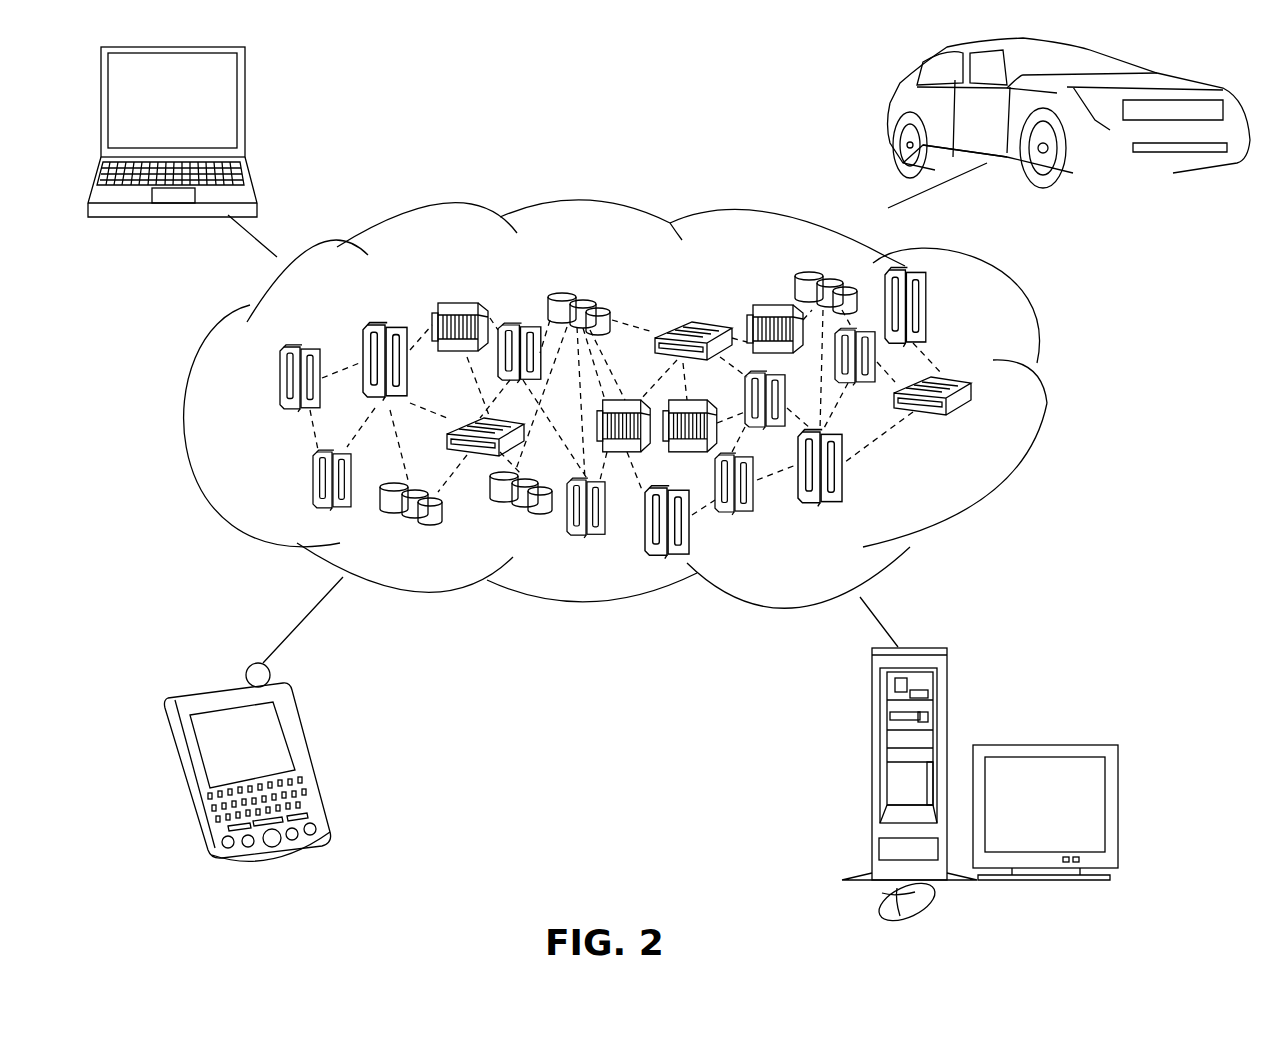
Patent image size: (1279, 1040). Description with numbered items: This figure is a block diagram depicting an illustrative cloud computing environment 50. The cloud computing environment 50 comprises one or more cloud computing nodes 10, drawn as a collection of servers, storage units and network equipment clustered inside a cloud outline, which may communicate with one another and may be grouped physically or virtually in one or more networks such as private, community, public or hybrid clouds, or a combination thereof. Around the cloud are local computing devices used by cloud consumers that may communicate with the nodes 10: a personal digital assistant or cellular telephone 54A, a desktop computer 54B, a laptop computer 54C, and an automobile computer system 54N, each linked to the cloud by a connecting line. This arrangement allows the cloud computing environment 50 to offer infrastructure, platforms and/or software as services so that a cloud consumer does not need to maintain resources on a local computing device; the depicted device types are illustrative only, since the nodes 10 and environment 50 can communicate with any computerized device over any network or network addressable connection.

The cloud computing environment 50 is at (1047, 392).
The cloud computing nodes 10 is at (953, 502).
The personal digital assistant or cellular telephone 54A is at (297, 725).
The desktop computer 54B is at (872, 710).
The laptop computer 54C is at (245, 87).
The automobile computer system 54N is at (890, 103).